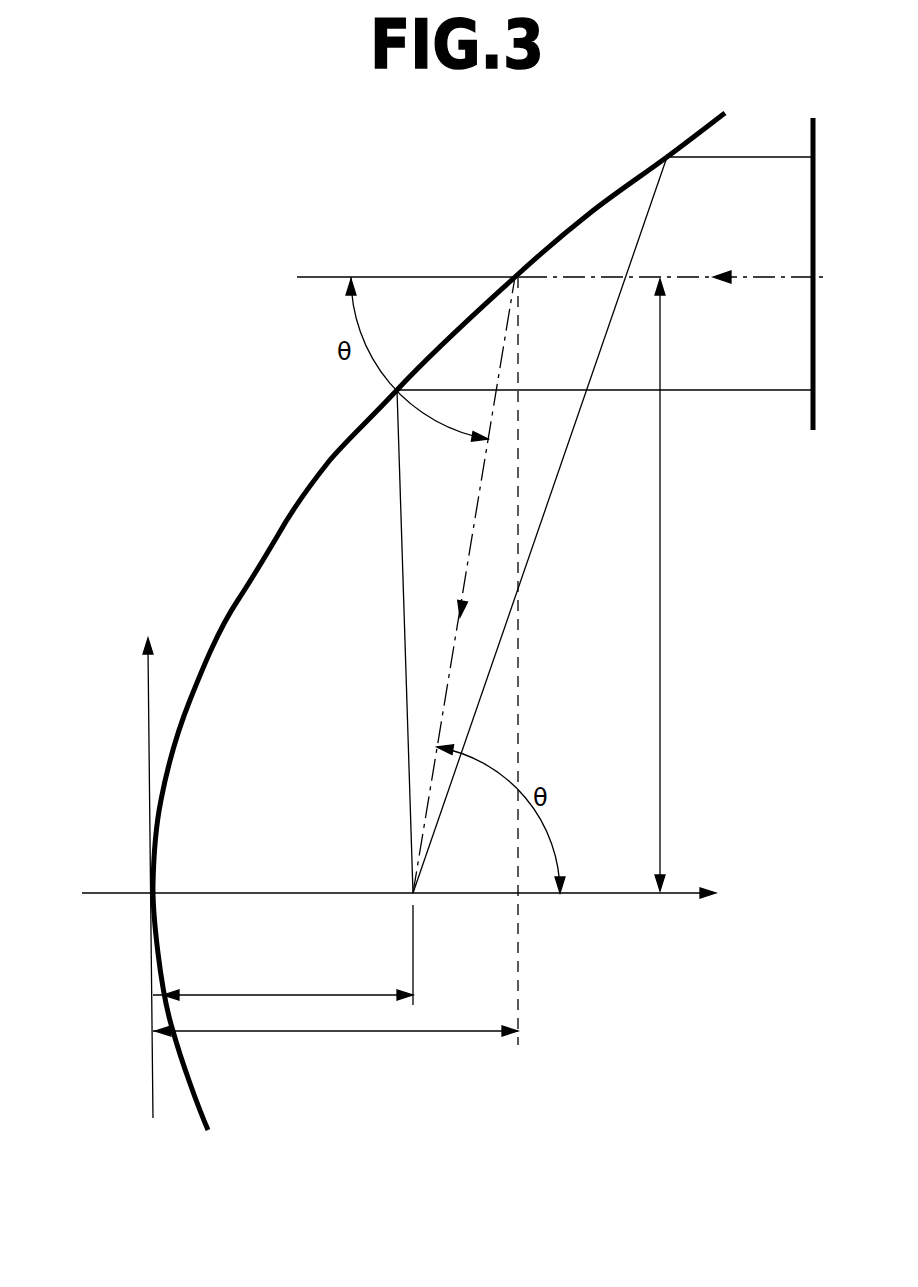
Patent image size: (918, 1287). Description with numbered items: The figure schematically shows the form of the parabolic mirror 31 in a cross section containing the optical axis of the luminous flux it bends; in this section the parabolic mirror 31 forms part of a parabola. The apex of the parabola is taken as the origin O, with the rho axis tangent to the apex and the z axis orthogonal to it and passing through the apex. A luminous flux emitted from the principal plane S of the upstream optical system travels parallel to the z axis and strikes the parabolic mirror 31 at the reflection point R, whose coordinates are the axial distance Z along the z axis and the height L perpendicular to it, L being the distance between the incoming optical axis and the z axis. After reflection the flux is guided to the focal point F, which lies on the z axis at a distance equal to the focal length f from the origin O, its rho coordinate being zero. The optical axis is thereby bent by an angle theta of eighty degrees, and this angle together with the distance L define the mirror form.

The parabolic mirror 31 is at (274, 536).
The origin O is at (388, 867).
The focal point F is at (532, 581).
The reflection point R is at (509, 268).
The principal plane S is at (810, 408).
The distance between optical axis before reflection and z axis L is at (667, 585).
The focal length f is at (283, 980).
The z coordinate of reflection point Z is at (335, 1045).